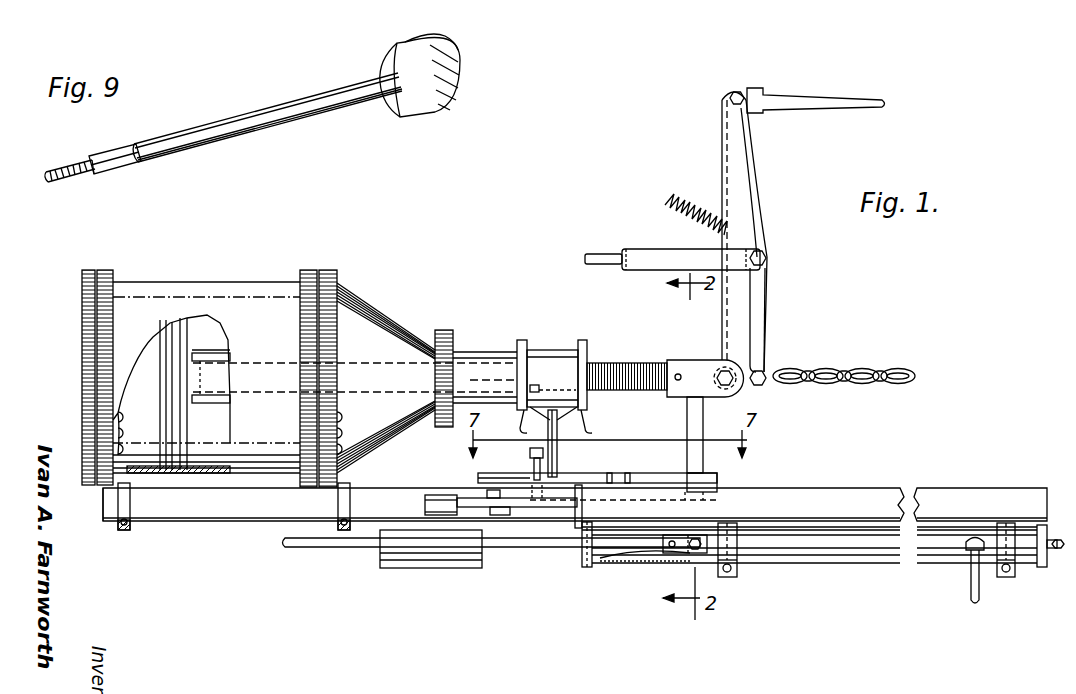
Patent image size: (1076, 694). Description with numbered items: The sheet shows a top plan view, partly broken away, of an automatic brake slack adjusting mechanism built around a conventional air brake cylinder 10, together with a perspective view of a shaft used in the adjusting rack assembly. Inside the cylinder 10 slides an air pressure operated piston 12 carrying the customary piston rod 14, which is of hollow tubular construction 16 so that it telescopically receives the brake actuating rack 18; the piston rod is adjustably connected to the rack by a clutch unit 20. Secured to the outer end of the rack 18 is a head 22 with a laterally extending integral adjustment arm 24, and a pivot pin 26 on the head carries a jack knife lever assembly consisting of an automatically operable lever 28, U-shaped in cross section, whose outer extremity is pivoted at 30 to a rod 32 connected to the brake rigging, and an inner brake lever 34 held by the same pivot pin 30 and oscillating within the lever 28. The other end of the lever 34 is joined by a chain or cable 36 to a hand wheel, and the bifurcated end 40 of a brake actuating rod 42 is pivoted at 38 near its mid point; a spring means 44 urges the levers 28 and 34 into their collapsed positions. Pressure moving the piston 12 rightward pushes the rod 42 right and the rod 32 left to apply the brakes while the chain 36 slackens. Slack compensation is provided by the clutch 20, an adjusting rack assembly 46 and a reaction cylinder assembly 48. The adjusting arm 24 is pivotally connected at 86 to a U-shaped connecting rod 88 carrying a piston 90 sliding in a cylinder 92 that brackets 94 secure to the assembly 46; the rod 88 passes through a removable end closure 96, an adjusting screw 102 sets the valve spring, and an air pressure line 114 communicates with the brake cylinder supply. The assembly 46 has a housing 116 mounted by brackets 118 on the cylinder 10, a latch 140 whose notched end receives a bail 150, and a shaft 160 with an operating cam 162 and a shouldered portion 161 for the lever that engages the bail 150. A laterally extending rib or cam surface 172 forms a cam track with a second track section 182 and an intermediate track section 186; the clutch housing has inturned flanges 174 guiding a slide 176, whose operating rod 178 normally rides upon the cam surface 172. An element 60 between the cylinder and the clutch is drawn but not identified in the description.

In FIG. 1, the air brake cylinder 10 is at (270, 294).
In FIG. 1, the piston 12 is at (170, 432).
In FIG. 1, the piston rod 14 is at (226, 398).
In FIG. 1, the hollow tubular construction 16 is at (201, 370).
In FIG. 1, the brake actuating rack 18 is at (622, 365).
In FIG. 1, the clutch unit 20 is at (556, 350).
In FIG. 1, the head 22 is at (693, 376).
In FIG. 1, the adjustment arm 24 is at (693, 414).
In FIG. 1, the pivot pin 26 is at (723, 370).
In FIG. 1, the automatically operable lever 28 is at (737, 167).
In FIG. 1, the pivot pin 30 is at (728, 95).
In FIG. 1, the rod 32 is at (818, 100).
In FIG. 1, the inner brake lever 34 is at (765, 226).
In FIG. 1, the chain or cable 36 is at (812, 368).
In FIG. 1, the pivot 38 is at (768, 256).
In FIG. 1, the bifurcated end 40 is at (650, 255).
In FIG. 1, the brake actuating rod 42 is at (598, 252).
In FIG. 1, the spring means 44 is at (661, 198).
In FIG. 1, the adjusting rack assembly 46 is at (796, 486).
In FIG. 1, the reaction cylinder assembly 48 is at (808, 568).
In FIG. 1, the drive disc 60 is at (477, 360).
In FIG. 1, the pivotal connection 86 is at (685, 556).
In FIG. 1, the connecting rod 88 is at (527, 543).
In FIG. 1, the piston 90 is at (647, 556).
In FIG. 1, the cylinder 92 is at (617, 560).
In FIG. 1, the brackets 94 is at (735, 548).
In FIG. 1, the end closure 96 is at (583, 552).
In FIG. 1, the adjusting screw 102 is at (1054, 540).
In FIG. 1, the air pressure line 114 is at (980, 590).
In FIG. 1, the housing 116 is at (745, 495).
In FIG. 1, the brackets 118 is at (125, 507).
In FIG. 1, the latch 140 is at (465, 503).
In FIG. 1, the bail 150 is at (583, 517).
In FIG. 9, the shaft 160 is at (237, 130).
In FIG. 1, the shaft 160 is at (536, 466).
In FIG. 9, the shouldered portion 161 is at (108, 153).
In FIG. 9, the operating cam 162 is at (452, 70).
In FIG. 1, the operating cam 162 is at (530, 452).
In FIG. 1, the cam surface 172 is at (664, 473).
In FIG. 1, the inturned flanges 174 is at (519, 414).
In FIG. 1, the slide 176 is at (553, 378).
In FIG. 1, the operating rod 178 is at (558, 454).
In FIG. 1, the second track section 182 is at (486, 475).
In FIG. 1, the intermediate track section 186 is at (590, 476).